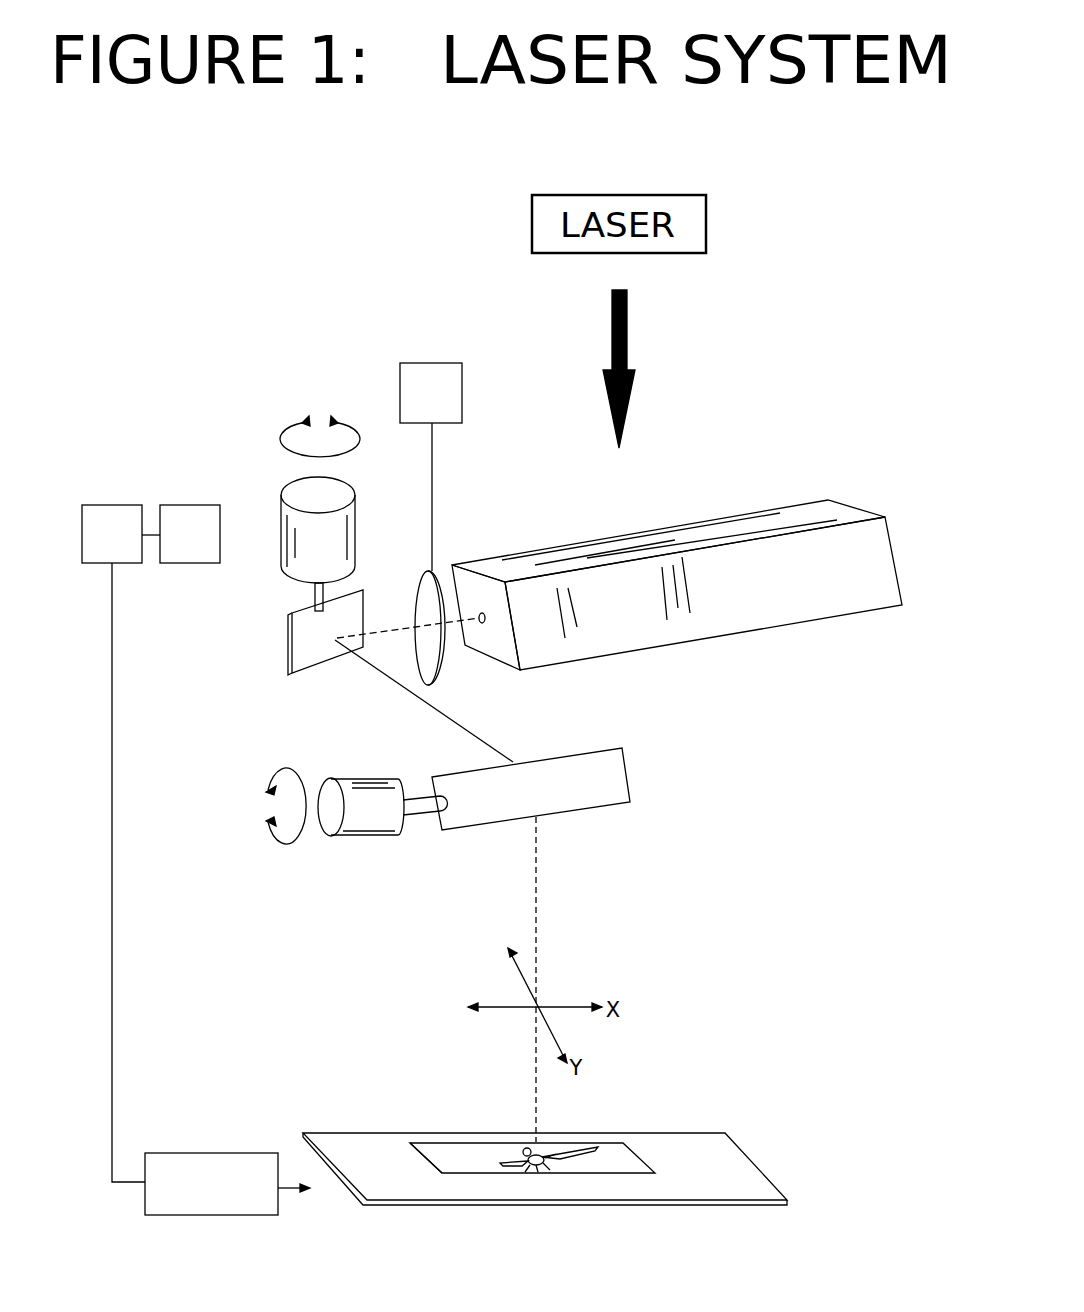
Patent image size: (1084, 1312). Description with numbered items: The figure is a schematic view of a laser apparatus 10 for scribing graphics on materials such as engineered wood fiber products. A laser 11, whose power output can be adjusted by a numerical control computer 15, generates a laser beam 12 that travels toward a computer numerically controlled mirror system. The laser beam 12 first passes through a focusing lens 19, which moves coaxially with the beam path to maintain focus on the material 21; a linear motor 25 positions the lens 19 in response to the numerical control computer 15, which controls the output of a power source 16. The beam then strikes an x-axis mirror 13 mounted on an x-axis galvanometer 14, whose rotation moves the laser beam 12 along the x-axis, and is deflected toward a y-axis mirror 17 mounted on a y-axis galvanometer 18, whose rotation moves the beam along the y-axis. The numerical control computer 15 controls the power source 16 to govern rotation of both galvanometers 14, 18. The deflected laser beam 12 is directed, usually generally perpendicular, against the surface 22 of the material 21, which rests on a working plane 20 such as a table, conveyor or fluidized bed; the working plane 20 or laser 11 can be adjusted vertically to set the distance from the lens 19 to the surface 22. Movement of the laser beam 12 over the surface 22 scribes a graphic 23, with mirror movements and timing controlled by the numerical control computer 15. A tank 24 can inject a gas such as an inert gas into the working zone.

The apparatus 10 is at (140, 479).
The laser 11 is at (703, 517).
The laser beam 12 is at (385, 687).
The x-axis mirror 13 is at (285, 640).
The x-axis galvanometer 14 is at (360, 518).
The numerical control computer 15 is at (112, 534).
The power source 16 is at (181, 534).
The y-axis mirror 17 is at (620, 797).
The y-axis galvanometer 18 is at (376, 835).
The lens 19 is at (447, 655).
The working plane 20 is at (720, 1163).
The material 21 is at (626, 1145).
The surface 22 is at (427, 1152).
The graphic 23 is at (567, 1165).
The tank 24 is at (211, 889).
The linear motor 25 is at (431, 467).